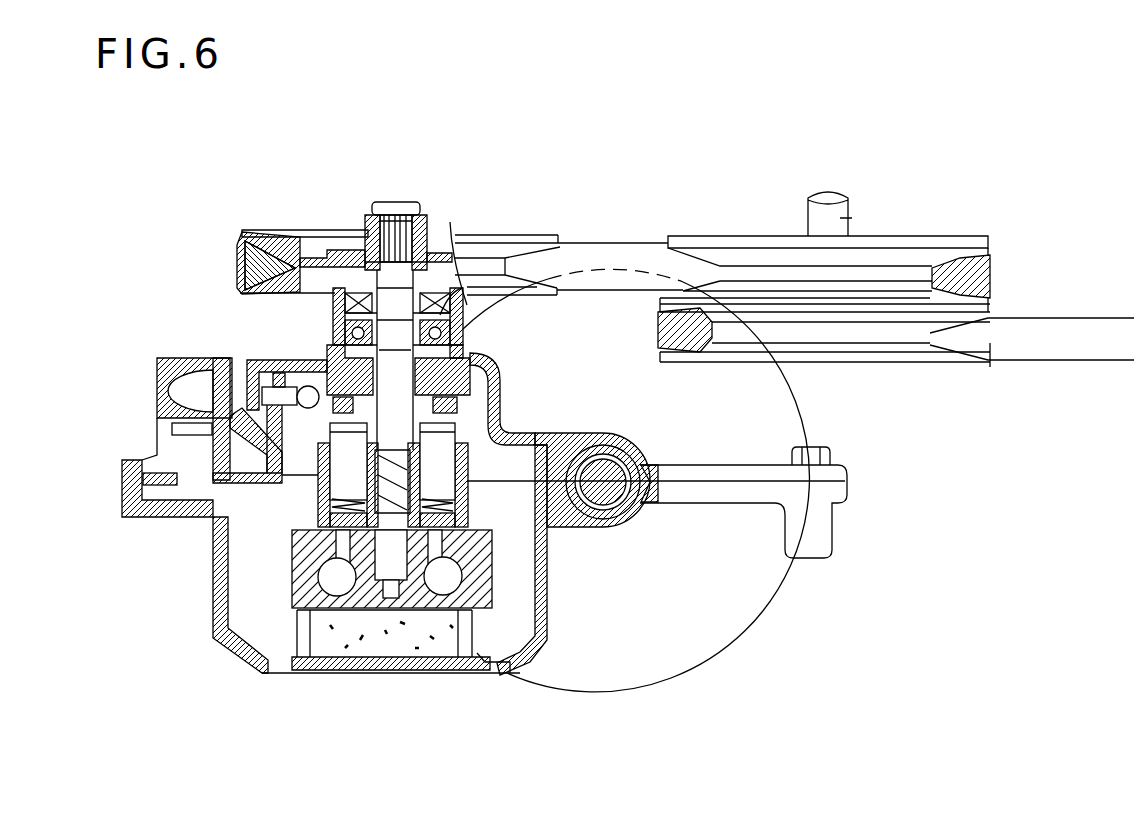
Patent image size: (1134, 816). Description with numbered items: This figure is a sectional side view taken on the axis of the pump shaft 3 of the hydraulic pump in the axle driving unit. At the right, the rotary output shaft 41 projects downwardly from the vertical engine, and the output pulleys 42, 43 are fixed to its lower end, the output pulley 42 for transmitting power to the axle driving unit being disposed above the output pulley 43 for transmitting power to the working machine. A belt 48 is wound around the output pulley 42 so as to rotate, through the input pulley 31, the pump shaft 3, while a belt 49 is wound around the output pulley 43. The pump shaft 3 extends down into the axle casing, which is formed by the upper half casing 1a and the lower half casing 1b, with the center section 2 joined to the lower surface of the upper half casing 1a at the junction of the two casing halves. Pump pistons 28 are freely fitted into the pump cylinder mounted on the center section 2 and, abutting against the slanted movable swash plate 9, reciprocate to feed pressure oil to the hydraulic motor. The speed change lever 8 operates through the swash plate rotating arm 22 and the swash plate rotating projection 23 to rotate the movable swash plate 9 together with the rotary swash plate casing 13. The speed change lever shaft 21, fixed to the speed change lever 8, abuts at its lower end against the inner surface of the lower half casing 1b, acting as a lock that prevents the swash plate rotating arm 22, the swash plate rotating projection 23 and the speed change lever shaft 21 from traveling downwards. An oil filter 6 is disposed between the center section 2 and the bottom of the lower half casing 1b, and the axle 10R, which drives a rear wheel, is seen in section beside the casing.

The upper half casing 1a is at (636, 404).
The lower half casing 1b is at (214, 576).
The center section 2 is at (527, 588).
The pump shaft 3 is at (372, 230).
The oil filter 6 is at (380, 633).
The speed change lever 8 is at (160, 397).
The movable swash plate 9 is at (437, 412).
The axle 10R is at (603, 500).
The rotary swash plate casing 13 is at (492, 376).
The speed change lever shaft 21 is at (215, 363).
The swash plate rotating arm 22 is at (243, 490).
The swash plate rotating projection 23 is at (310, 367).
The pump piston 28 is at (442, 464).
The input pulley 31 is at (281, 230).
The rotary output shaft 41 is at (850, 220).
The output pulley 42 is at (747, 236).
The output pulley 43 is at (943, 370).
The belt 48 is at (618, 240).
The belt 49 is at (1032, 308).